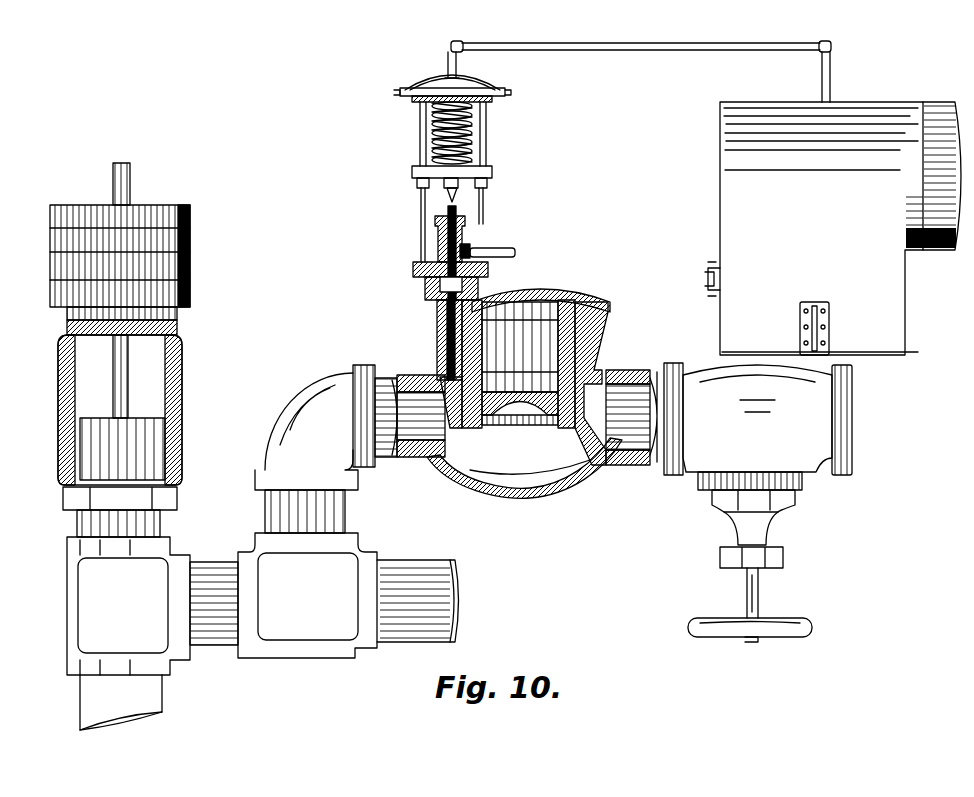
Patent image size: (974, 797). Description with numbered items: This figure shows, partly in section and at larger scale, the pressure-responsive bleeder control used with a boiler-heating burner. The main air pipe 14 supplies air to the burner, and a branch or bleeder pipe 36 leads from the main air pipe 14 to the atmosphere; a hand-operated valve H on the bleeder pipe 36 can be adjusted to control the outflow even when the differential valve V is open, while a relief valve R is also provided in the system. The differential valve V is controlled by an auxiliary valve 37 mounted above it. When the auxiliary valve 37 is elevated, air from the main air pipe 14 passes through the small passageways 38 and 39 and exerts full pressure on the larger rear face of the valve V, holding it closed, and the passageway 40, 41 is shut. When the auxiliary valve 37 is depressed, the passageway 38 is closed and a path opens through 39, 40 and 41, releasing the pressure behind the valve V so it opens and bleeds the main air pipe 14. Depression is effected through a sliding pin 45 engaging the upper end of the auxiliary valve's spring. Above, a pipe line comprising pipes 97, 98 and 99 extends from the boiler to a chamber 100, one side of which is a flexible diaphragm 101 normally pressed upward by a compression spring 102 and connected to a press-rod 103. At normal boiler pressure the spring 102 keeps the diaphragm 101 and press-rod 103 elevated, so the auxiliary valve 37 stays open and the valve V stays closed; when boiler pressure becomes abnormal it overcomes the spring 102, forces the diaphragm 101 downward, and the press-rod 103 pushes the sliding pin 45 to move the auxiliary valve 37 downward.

The main air pipe 14 is at (398, 562).
The branch or bleeder pipe 36 is at (664, 455).
The auxiliary valve 37 is at (424, 283).
The passageway 38 is at (438, 330).
The passageway 39 is at (500, 288).
The passageway 40 is at (470, 246).
The passageway 41 is at (500, 248).
The sliding pin 45 is at (458, 212).
The pipe 97 is at (831, 88).
The pipe 98 is at (642, 46).
The pipe 99 is at (445, 62).
The chamber 100 is at (464, 81).
The flexible diaphragm 101 is at (487, 98).
The compression spring 102 is at (476, 144).
The press-rod 103 is at (458, 190).
The relief valve R is at (48, 268).
The differential valve V is at (524, 399).
The hand-operated valve H is at (767, 503).